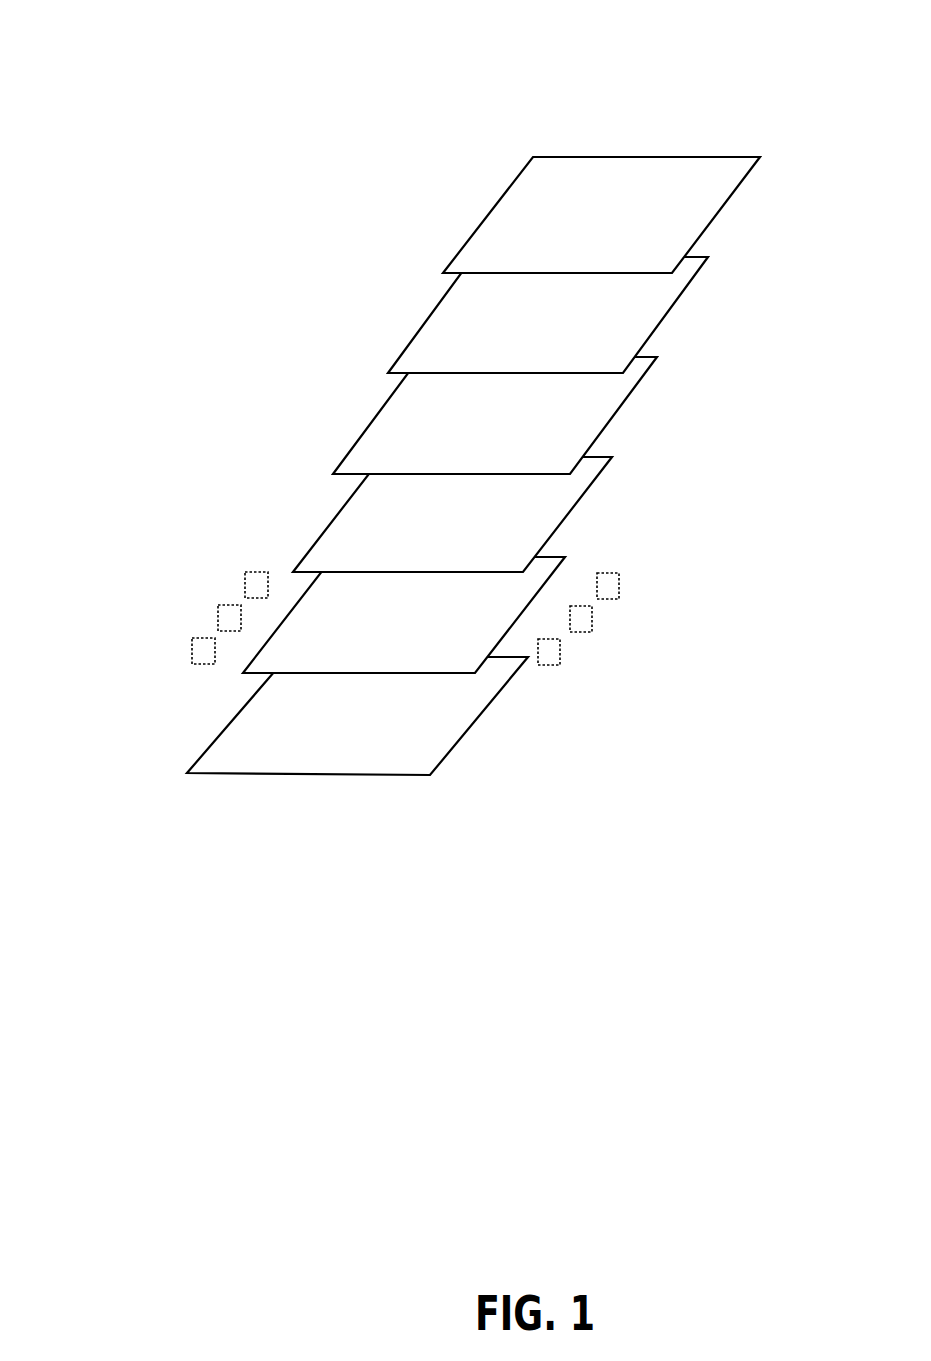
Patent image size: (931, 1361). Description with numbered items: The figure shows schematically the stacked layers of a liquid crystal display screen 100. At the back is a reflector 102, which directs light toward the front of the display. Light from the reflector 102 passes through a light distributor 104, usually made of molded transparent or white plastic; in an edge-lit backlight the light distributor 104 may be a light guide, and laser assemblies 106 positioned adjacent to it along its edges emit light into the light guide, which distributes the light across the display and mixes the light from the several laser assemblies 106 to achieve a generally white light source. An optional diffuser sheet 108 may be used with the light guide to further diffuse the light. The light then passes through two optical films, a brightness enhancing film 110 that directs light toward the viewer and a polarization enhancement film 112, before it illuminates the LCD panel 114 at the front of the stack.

The liquid crystal display (LCD) screen 100 is at (405, 50).
The reflector 102 is at (423, 747).
The light distributor 104 is at (493, 620).
The laser assemblies 106 is at (552, 648).
The diffuser sheet 108 is at (537, 528).
The brightness enhancing film 110 is at (593, 420).
The polarization enhancement film 112 is at (618, 313).
The LCD panel 114 is at (678, 223).